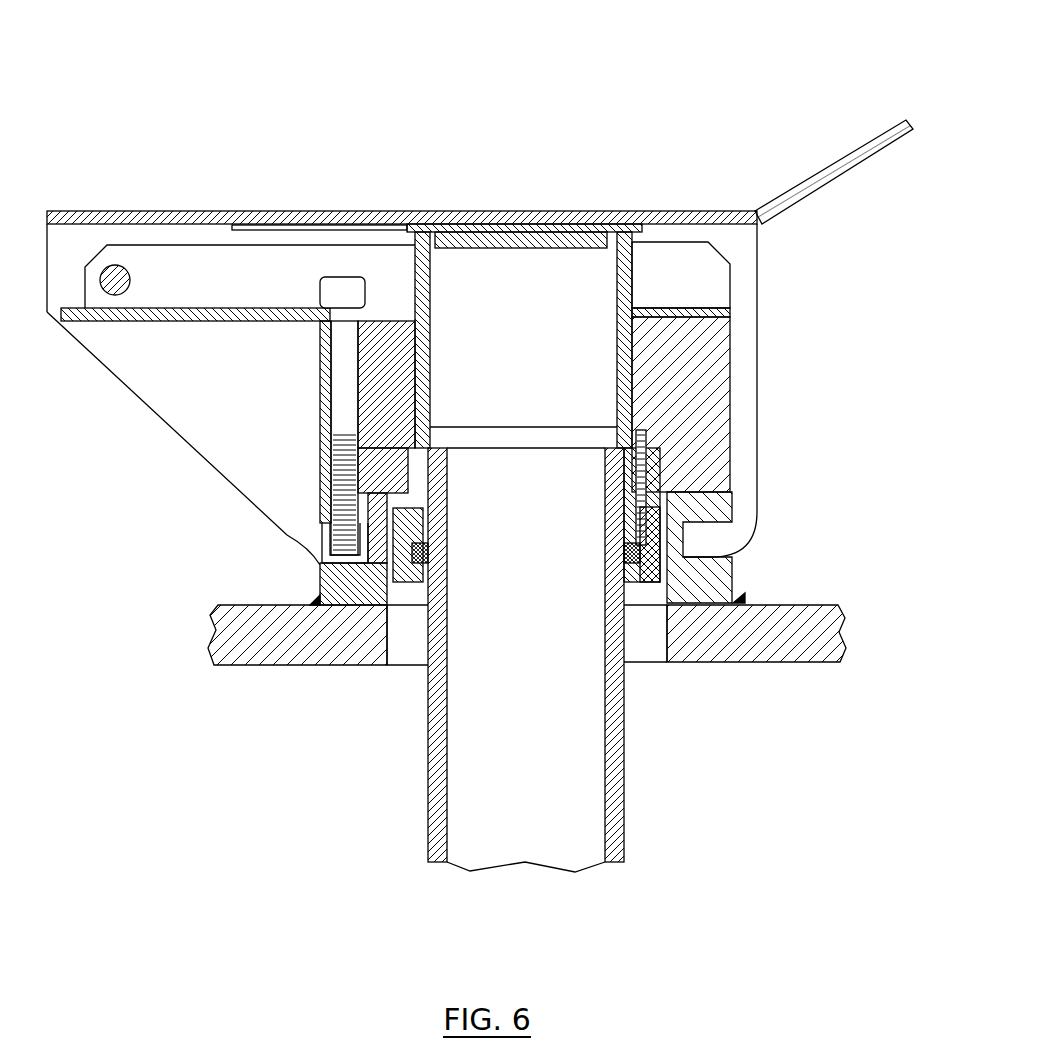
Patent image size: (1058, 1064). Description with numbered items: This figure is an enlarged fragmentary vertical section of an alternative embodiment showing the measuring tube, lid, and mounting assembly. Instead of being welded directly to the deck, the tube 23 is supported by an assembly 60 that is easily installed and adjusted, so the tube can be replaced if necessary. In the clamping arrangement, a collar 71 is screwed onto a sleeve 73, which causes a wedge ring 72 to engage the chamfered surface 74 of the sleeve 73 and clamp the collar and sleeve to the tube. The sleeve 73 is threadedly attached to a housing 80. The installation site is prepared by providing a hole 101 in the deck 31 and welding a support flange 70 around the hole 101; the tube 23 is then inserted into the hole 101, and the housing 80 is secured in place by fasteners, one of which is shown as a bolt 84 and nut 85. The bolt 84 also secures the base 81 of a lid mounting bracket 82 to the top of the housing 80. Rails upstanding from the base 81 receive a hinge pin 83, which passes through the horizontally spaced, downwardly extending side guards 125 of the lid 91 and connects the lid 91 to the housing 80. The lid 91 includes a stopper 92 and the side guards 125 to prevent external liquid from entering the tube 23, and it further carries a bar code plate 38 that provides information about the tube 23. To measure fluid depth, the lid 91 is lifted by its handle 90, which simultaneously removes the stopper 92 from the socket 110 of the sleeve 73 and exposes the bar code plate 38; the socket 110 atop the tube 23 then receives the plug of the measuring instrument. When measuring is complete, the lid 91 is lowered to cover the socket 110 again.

The assembly 60 is at (520, 78).
The handle 90 is at (868, 140).
The lid 91 is at (381, 211).
The bar code plate 38 is at (283, 224).
The hinge pin 83 is at (118, 276).
The side guards 125 is at (192, 457).
The bolt 84 is at (345, 355).
The nut 85 is at (322, 535).
The stopper 92 is at (500, 238).
The socket 110 is at (615, 248).
The lid mounting bracket 82 is at (712, 290).
The base 81 is at (682, 300).
The housing 80 is at (712, 394).
The tube 23 is at (615, 812).
The collar 71 is at (648, 568).
The sleeve 73 is at (640, 500).
The chamfered surface 74 is at (643, 557).
The wedge ring 72 is at (630, 552).
The support flange 70 is at (715, 580).
The deck 31 is at (768, 640).
The hole 101 is at (640, 640).